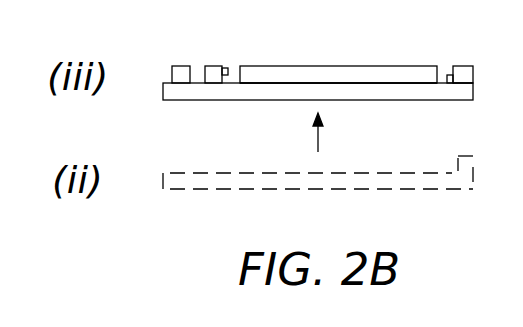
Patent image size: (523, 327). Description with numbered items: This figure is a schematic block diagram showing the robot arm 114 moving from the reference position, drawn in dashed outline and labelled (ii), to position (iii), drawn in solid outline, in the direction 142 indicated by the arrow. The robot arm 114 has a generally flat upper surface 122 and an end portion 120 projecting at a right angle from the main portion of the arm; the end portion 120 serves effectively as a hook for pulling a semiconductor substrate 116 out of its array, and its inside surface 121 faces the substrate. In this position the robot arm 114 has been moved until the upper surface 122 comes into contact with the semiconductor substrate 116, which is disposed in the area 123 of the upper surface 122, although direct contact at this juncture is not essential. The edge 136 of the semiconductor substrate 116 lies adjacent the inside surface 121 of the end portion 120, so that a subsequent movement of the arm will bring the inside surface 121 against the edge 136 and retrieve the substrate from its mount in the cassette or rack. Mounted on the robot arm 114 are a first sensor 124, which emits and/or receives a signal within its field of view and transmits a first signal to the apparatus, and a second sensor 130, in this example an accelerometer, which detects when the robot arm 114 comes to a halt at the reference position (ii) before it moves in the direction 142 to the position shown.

The robot arm 114 is at (392, 95).
The semiconductor substrate 116 is at (328, 65).
The end portion 120 is at (463, 71).
The inside surface 121 is at (447, 83).
The upper surface 122 is at (234, 72).
The area of the upper surface 123 is at (380, 82).
The first sensor 124 is at (215, 65).
The second sensor 130 is at (180, 65).
The edge of semiconductor substrate 136 is at (446, 73).
The direction 142 is at (318, 137).